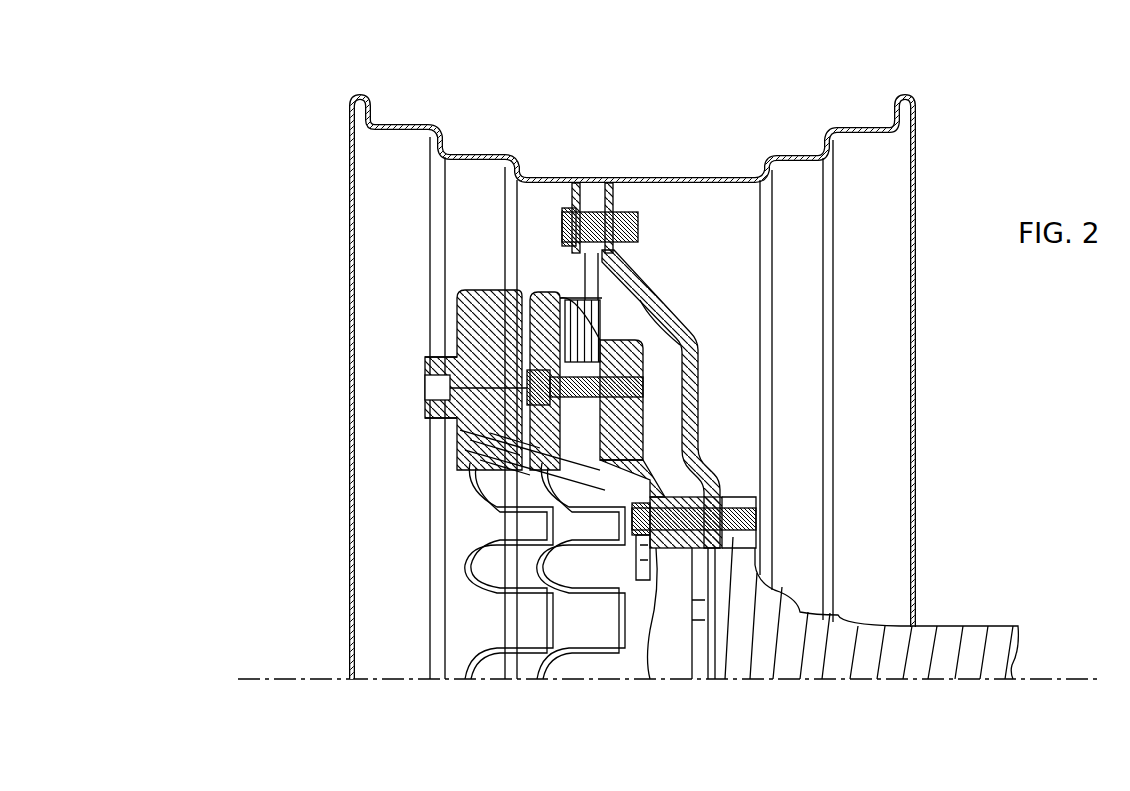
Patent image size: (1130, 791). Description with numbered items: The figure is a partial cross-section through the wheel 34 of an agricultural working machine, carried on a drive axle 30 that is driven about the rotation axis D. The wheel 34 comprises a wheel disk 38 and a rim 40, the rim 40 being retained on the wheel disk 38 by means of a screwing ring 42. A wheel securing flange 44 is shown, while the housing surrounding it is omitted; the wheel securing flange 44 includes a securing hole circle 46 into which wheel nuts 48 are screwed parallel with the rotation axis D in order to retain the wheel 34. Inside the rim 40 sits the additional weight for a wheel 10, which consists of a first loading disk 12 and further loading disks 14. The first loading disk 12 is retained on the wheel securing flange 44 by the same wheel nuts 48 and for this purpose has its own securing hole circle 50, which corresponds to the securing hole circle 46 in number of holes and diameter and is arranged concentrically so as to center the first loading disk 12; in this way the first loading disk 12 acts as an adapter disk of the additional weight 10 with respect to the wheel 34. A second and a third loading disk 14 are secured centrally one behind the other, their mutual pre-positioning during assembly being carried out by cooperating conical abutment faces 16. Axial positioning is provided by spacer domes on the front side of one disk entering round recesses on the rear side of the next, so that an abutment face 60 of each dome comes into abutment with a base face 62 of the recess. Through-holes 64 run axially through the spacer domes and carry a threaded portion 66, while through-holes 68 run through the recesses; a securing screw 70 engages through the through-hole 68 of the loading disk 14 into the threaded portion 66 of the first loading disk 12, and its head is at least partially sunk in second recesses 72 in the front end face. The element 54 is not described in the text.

The additional weight for a wheel 10 is at (541, 84).
The first loading disk 12 is at (620, 353).
The loading disk 14 is at (520, 440).
The conical abutment faces 16 is at (600, 437).
The drive axle 30 is at (920, 650).
The wheel 34 is at (958, 192).
The wheel disk 38 is at (660, 332).
The rim 40 is at (781, 158).
The screwing ring 42 is at (590, 205).
The wheel securing flange 44 is at (767, 592).
The securing hole circle 46 is at (762, 512).
The wheel nuts 48 is at (779, 518).
The securing hole circle 50 is at (685, 507).
The plate 54 is at (710, 592).
The abutment face 60 is at (545, 290).
The base face 62 is at (600, 423).
The through-holes 64 is at (602, 318).
The threaded portion 66 is at (622, 337).
The through-holes 68 is at (494, 286).
The securing screw 70 is at (452, 390).
The second recesses 72 is at (442, 360).
The rotation axis D is at (1047, 679).